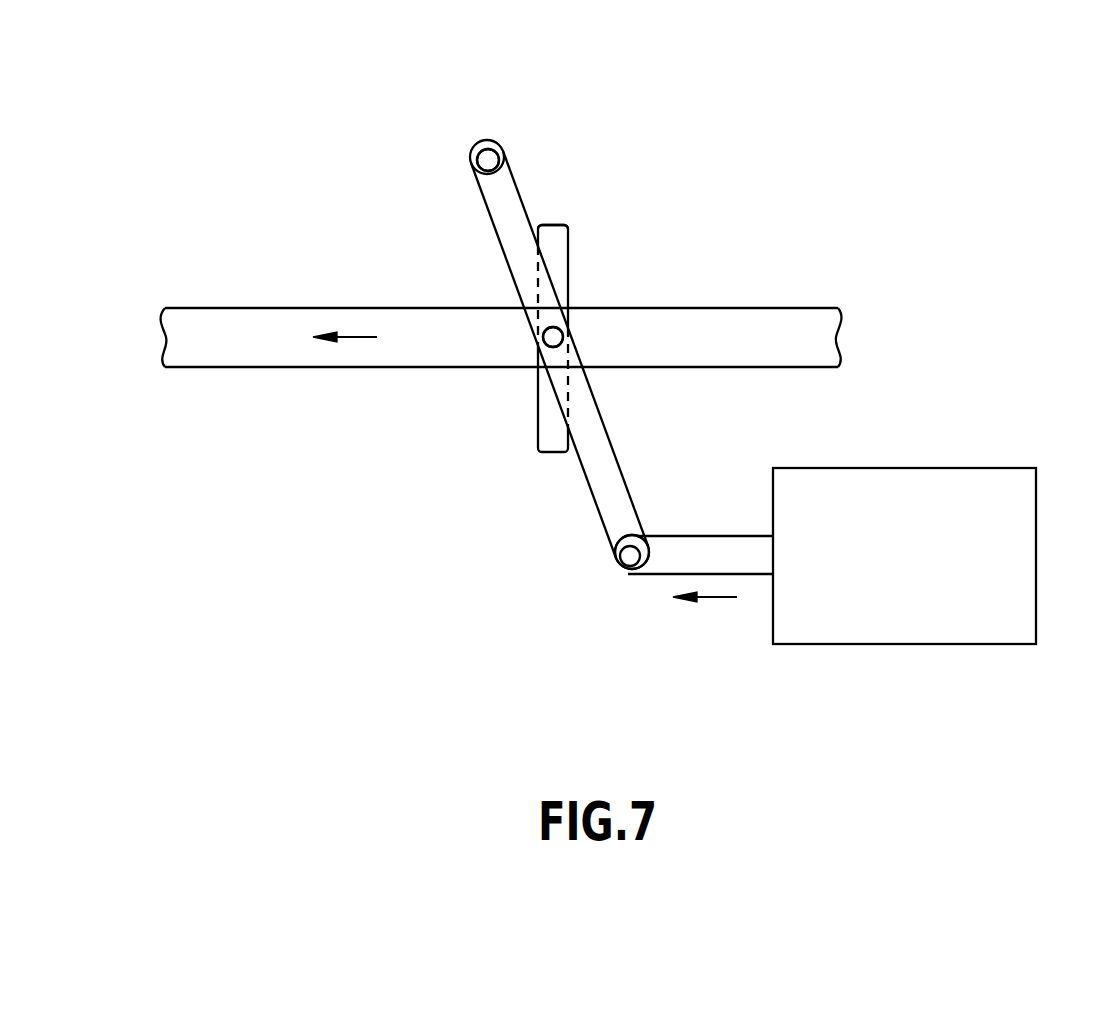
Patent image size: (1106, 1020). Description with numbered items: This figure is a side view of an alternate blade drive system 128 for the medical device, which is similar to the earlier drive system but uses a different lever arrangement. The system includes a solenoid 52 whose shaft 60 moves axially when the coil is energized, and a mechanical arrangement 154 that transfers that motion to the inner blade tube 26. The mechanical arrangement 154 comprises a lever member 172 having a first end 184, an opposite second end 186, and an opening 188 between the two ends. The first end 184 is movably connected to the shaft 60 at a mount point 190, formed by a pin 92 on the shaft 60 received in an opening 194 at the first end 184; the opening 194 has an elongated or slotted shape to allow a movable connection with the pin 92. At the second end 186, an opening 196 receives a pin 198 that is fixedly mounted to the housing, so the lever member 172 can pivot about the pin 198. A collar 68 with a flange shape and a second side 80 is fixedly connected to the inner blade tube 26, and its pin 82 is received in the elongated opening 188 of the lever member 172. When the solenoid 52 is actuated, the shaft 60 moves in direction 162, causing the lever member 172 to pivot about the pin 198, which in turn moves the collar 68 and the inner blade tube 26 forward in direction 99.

The blade drive system 128 is at (1008, 150).
The inner blade tube 26 is at (282, 333).
The forward motion direction 99 is at (357, 337).
The lever member 172 is at (598, 432).
The second end 186 is at (487, 140).
The opening 196 is at (478, 168).
The pin 198 is at (489, 160).
The second side 80 is at (568, 250).
The collar 68 is at (553, 225).
The pin 82 is at (553, 337).
The opening 188 is at (552, 347).
The first end 184 is at (622, 565).
The pin 92 is at (630, 556).
The opening 194 is at (642, 537).
The shaft 60 is at (732, 536).
The solenoid 52 is at (912, 630).
The solenoid power stroke direction 162 is at (713, 597).
The mount point 190 is at (636, 606).
The mechanical arrangement 154 is at (302, 504).